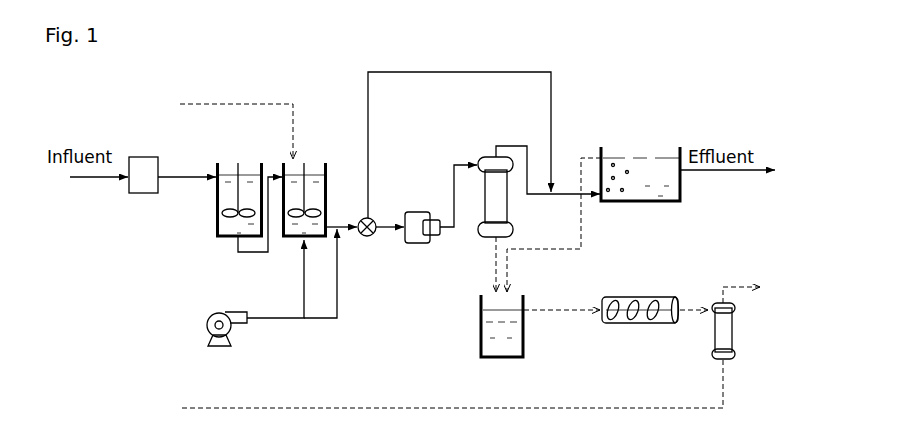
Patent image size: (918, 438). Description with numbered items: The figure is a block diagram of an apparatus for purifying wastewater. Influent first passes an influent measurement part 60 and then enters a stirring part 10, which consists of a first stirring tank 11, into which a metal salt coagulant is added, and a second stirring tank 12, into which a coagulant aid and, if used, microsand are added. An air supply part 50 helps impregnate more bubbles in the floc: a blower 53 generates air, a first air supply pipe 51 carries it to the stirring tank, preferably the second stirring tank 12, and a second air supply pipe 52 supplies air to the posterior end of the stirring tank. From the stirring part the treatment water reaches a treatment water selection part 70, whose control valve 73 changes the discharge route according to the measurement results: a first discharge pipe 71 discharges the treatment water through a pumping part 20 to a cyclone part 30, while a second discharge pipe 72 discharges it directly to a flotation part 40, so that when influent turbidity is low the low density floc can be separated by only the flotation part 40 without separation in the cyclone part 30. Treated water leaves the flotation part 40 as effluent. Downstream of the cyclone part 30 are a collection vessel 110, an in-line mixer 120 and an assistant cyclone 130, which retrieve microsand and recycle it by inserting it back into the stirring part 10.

The stirring part 10 is at (228, 223).
The first stirring tank 11 is at (227, 238).
The second stirring tank 12 is at (287, 238).
The pumping part 20 is at (420, 210).
The cyclone part 30 is at (490, 154).
The flotation part 40 is at (647, 150).
The air supply part 50 is at (238, 333).
The first air supply pipe 51 is at (304, 300).
The second air supply pipe 52 is at (337, 292).
The blower 53 is at (218, 313).
The influent measurement part 60 is at (143, 155).
The treatment water selection part 70 is at (379, 238).
The first discharge pipe 71 is at (383, 223).
The second discharge pipe 72 is at (368, 116).
The control valve 73 is at (365, 238).
The collection vessel 110 is at (478, 332).
The in-line mixer 120 is at (640, 327).
The assistant cyclone 130 is at (734, 328).